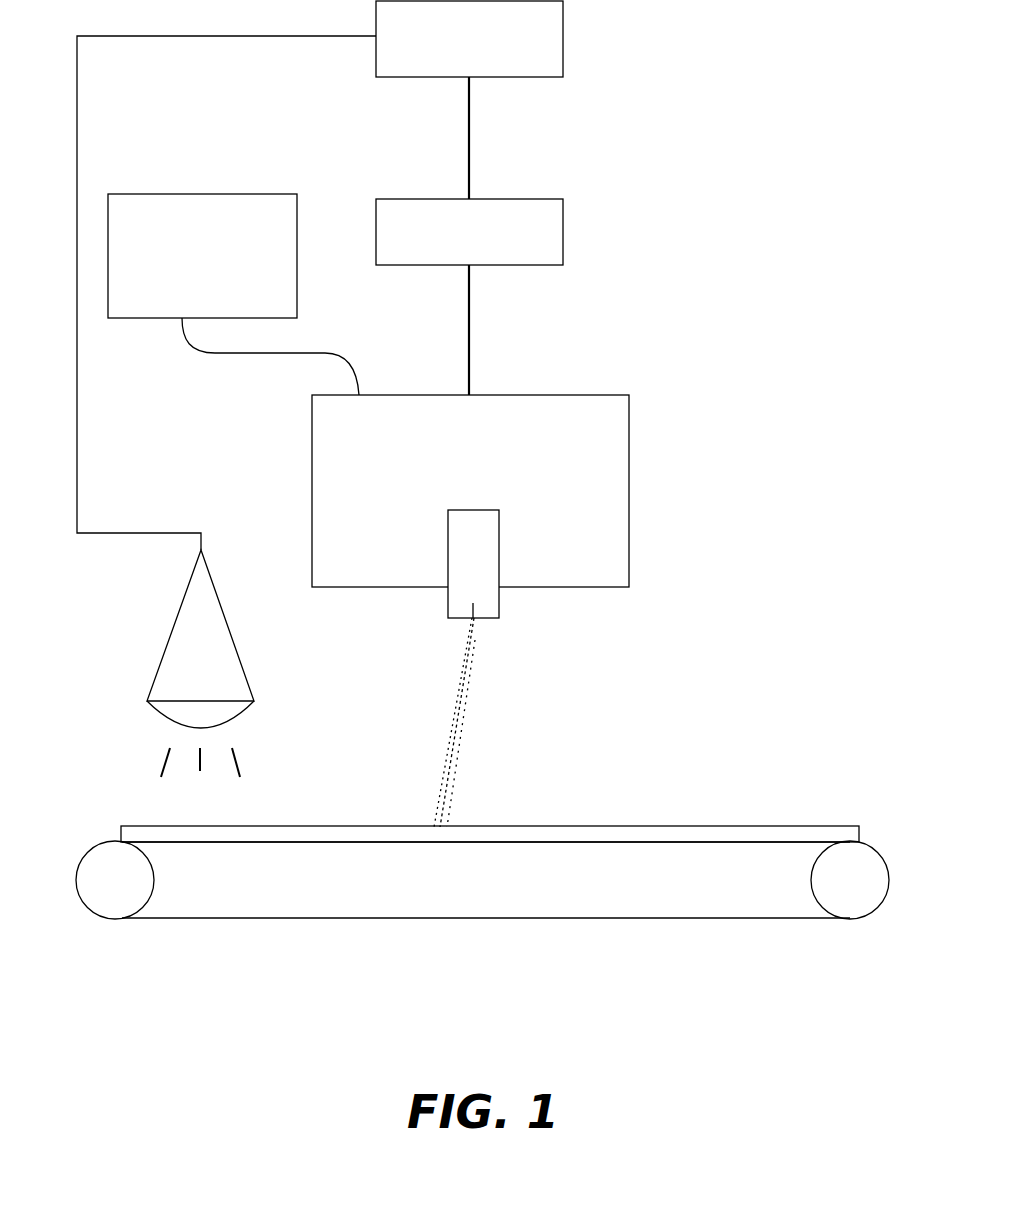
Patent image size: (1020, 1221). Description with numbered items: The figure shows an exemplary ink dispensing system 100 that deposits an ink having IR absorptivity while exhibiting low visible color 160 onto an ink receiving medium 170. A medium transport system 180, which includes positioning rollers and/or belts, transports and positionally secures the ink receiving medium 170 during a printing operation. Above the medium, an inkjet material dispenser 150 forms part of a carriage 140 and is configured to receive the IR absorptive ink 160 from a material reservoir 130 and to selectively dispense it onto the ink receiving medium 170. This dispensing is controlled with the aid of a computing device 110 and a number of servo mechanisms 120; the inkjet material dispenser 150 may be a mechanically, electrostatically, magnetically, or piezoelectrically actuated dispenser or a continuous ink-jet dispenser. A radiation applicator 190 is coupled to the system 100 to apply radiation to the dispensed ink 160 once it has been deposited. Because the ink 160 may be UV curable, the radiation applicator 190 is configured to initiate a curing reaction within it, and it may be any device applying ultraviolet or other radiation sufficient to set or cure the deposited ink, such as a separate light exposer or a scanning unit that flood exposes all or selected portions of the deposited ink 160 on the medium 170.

The system 100 is at (482, 524).
The computing device 110 is at (563, 37).
The servo mechanisms 120 is at (563, 232).
The material reservoir 130 is at (184, 279).
The carriage 140 is at (450, 440).
The inkjet material dispenser 150 is at (499, 540).
The ink having IR absorptivity while exhibiting low visible color 160 is at (473, 650).
The ink receiving medium 170 is at (715, 827).
The medium transport system 180 is at (655, 952).
The radiation applicator 190 is at (242, 654).